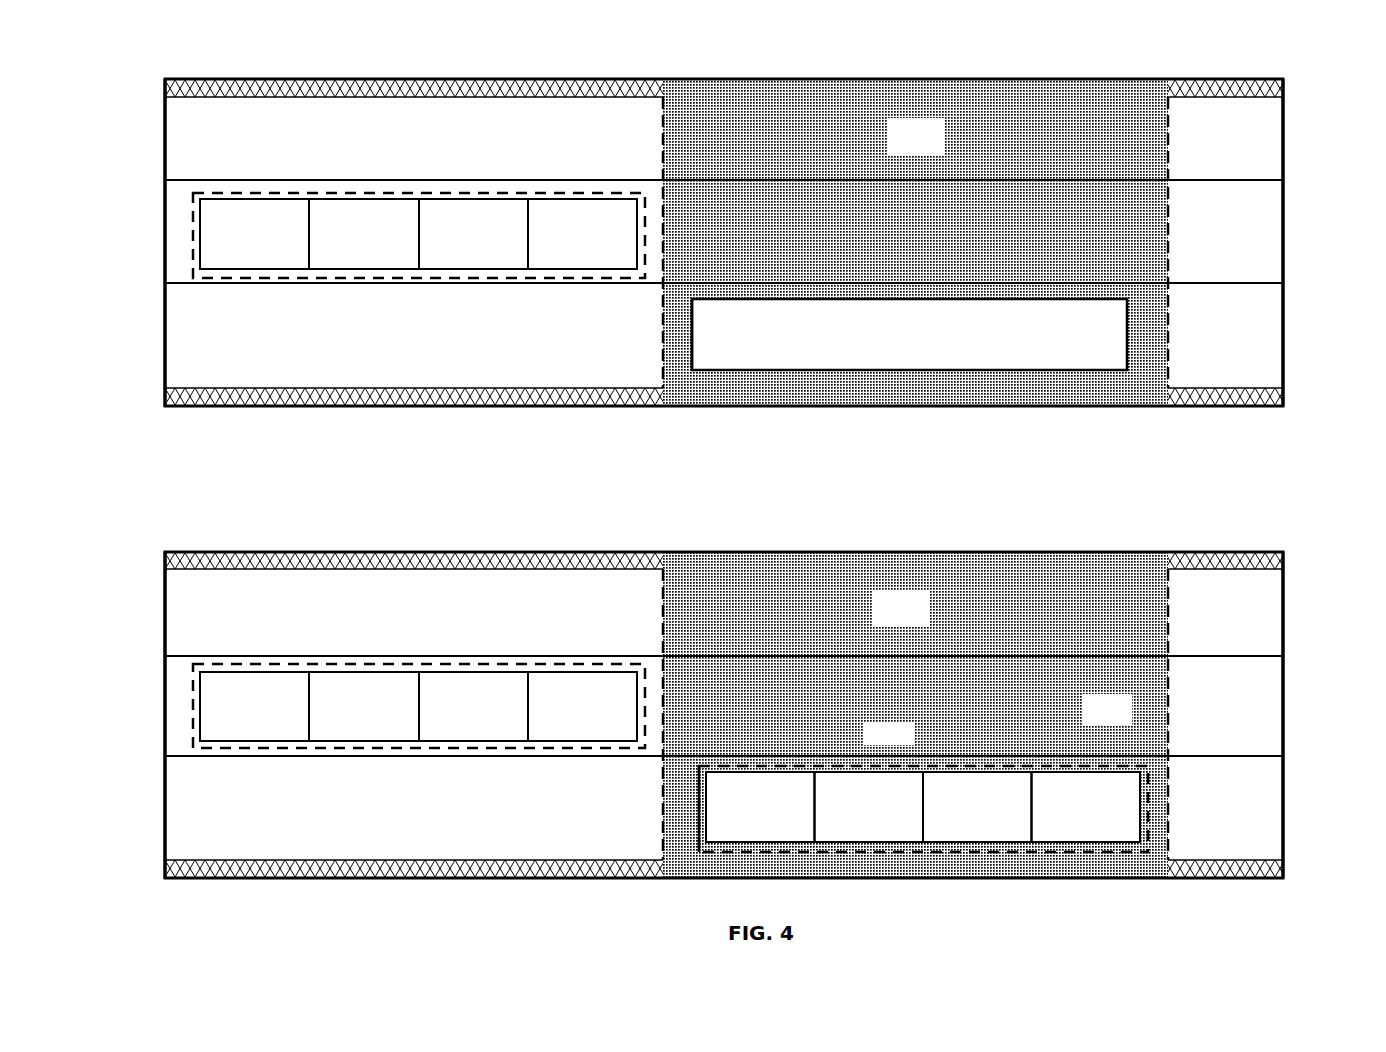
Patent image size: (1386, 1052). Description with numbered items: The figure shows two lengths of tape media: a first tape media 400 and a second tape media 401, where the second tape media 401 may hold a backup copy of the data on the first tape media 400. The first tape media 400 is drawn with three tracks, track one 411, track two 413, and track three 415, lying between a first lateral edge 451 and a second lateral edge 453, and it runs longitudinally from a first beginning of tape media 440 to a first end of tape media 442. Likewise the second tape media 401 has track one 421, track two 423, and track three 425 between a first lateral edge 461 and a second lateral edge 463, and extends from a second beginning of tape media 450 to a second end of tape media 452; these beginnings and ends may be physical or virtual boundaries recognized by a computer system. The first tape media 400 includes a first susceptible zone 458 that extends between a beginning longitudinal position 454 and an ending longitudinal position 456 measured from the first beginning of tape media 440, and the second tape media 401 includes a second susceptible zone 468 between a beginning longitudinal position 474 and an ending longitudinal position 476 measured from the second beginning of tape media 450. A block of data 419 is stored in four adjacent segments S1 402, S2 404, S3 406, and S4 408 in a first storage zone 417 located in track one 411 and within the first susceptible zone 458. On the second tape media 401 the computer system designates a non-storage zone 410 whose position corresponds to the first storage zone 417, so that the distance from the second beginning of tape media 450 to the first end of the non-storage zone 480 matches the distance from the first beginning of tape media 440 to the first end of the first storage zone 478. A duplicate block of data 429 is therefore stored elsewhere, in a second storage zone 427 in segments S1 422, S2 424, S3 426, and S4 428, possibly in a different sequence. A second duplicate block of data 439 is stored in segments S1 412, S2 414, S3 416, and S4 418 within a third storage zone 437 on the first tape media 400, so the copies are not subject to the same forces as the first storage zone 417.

The first tape media 400 is at (146, 530).
The second tape media 401 is at (148, 35).
The segment S1 402 is at (740, 833).
The segment S2 404 is at (849, 833).
The segment S3 406 is at (957, 833).
The segment S4 408 is at (1066, 833).
The non-storage zone 410 is at (889, 347).
The track one 411 is at (1198, 826).
The segment S1 412 is at (234, 732).
The track two 413 is at (1198, 721).
The segment S2 414 is at (344, 732).
The track three 415 is at (1198, 636).
The segment S3 416 is at (453, 732).
The first storage zone 417 is at (824, 765).
The segment S4 418 is at (562, 732).
The block of data 419 is at (1006, 760).
The track one 421 is at (1198, 348).
The segment S1 422 is at (562, 260).
The track two 423 is at (1198, 248).
The segment S2 424 is at (453, 260).
The track three 425 is at (1198, 166).
The segment S3 426 is at (344, 260).
The second storage zone 427 is at (231, 190).
The segment S4 428 is at (234, 260).
The duplicate block of data 429 is at (386, 189).
The third storage zone 437 is at (234, 663).
The second duplicate block of data 439 is at (390, 661).
The first beginning of tape media 440 is at (160, 730).
The first end of tape media 442 is at (1288, 712).
The second beginning of tape media 450 is at (160, 268).
The first lateral edge 451 is at (498, 882).
The second end of tape media 452 is at (1288, 241).
The second lateral edge 453 is at (492, 549).
The beginning longitudinal position 454 is at (663, 612).
The ending longitudinal position 456 is at (1170, 600).
The first susceptible zone 458 is at (880, 617).
The first lateral edge 461 is at (506, 409).
The second lateral edge 463 is at (505, 77).
The second susceptible zone 468 is at (896, 147).
The beginning longitudinal position 474 is at (663, 136).
The ending longitudinal position 476 is at (1170, 125).
The first end of the first storage zone 478 is at (700, 812).
The first end of the non-storage zone 480 is at (692, 345).